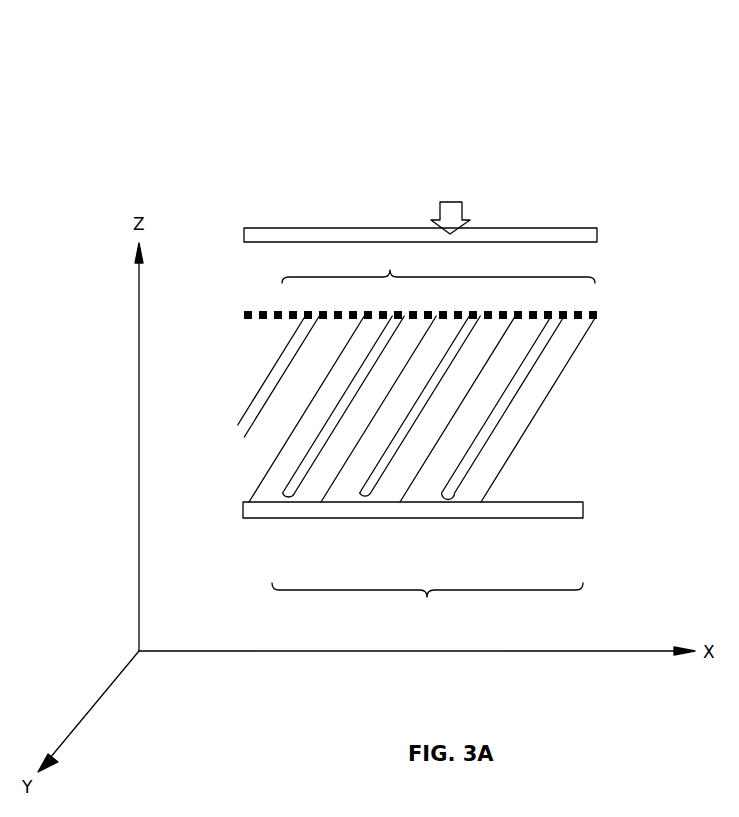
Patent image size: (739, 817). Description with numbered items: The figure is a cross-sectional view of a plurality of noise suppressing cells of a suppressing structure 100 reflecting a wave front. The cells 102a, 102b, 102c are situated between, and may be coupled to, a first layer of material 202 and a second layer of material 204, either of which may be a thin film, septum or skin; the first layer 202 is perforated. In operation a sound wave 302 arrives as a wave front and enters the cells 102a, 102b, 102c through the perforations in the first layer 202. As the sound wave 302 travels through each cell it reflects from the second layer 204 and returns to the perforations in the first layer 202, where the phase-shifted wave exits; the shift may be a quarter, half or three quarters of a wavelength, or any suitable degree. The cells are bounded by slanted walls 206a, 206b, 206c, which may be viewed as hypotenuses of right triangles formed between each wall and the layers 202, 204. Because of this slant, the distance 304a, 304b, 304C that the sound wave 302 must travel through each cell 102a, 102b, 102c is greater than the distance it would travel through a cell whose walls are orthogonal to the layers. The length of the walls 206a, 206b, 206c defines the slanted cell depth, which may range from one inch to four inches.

The suppressing structure 100 is at (285, 128).
The sound wave 302 is at (244, 232).
The first layer of material 202 is at (438, 265).
The second layer of material 204 is at (413, 564).
The wall 206a is at (525, 433).
The wall 206b is at (556, 320).
The wall 206c is at (455, 333).
The distance 304a is at (448, 370).
The distance 304b is at (507, 337).
The distance 304C is at (300, 472).
The cell 102a is at (433, 490).
The cell 102b is at (346, 500).
The cell 102c is at (300, 502).